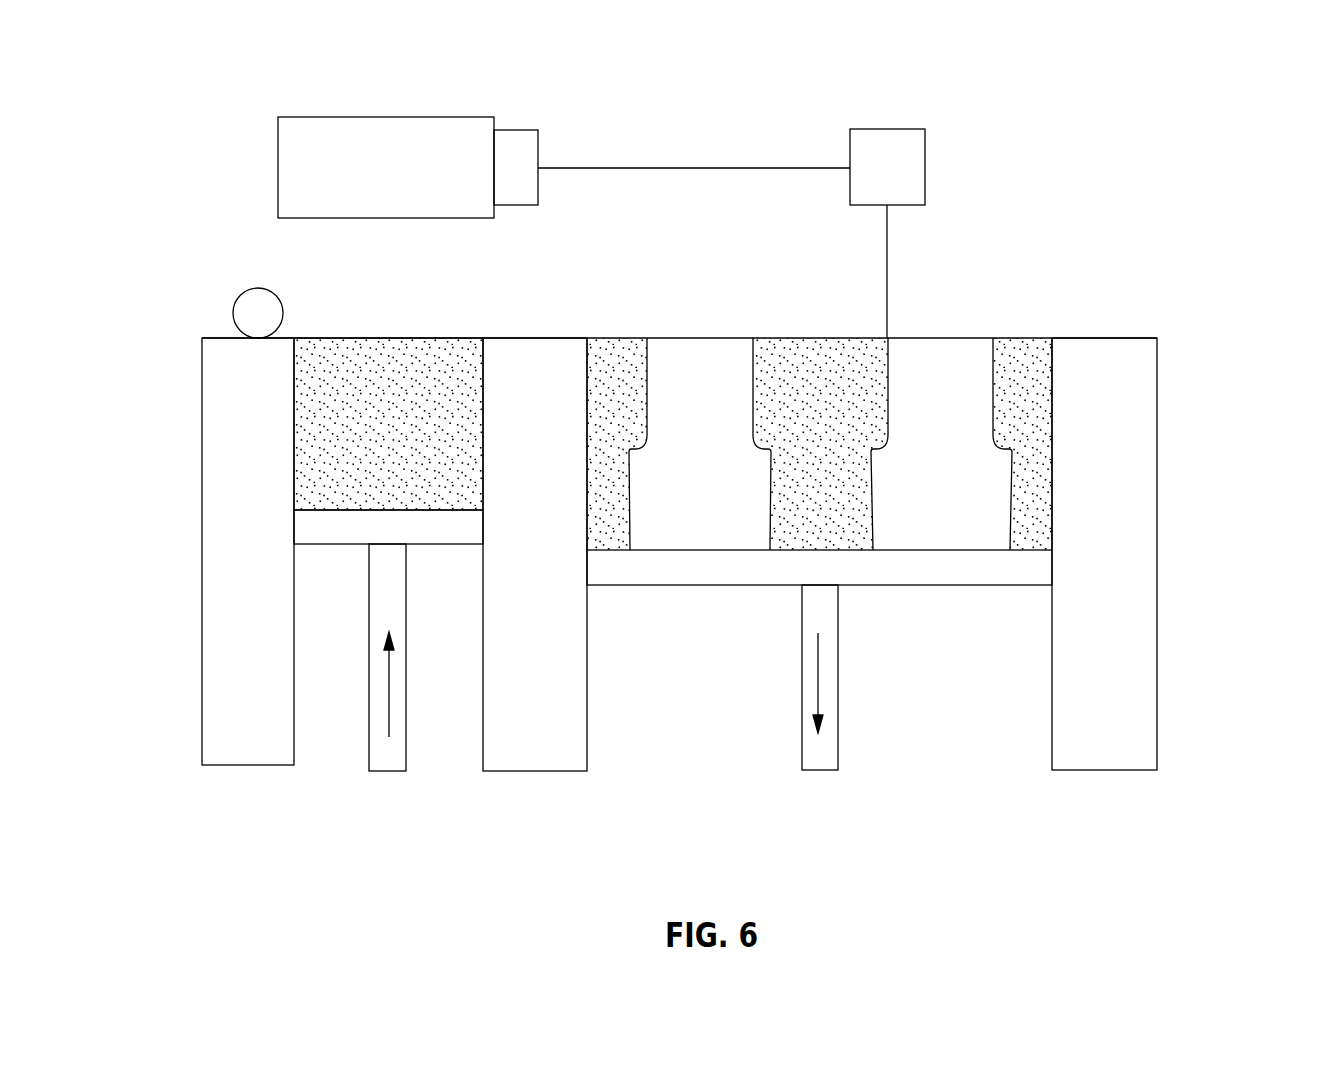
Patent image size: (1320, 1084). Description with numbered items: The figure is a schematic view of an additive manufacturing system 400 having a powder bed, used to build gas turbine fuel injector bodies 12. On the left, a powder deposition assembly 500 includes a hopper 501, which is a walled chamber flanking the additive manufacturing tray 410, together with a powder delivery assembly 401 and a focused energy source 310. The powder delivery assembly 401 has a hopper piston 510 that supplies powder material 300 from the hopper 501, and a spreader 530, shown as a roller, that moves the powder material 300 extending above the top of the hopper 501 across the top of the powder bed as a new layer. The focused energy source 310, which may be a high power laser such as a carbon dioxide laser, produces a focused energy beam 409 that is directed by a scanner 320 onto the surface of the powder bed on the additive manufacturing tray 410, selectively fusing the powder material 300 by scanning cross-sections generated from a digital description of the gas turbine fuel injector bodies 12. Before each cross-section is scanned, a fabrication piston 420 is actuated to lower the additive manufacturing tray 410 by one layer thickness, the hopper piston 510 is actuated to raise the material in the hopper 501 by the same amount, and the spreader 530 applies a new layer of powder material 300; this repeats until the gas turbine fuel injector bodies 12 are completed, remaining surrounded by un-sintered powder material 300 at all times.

The additive manufacturing system 400 is at (1130, 182).
The focused energy source 310 is at (407, 183).
The scanner 320 is at (908, 183).
The focused energy beam 409 is at (665, 168).
The spreader 530 is at (257, 288).
The powder delivery assembly 401 is at (371, 657).
The hopper 501 is at (488, 308).
The powder material 300 is at (413, 444).
The additive manufacturing tray 410 is at (606, 548).
The gas turbine fuel injector bodies 12 is at (701, 403).
The powder deposition assembly 500 is at (588, 797).
The hopper piston 510 is at (390, 772).
The fabrication piston 420 is at (818, 771).